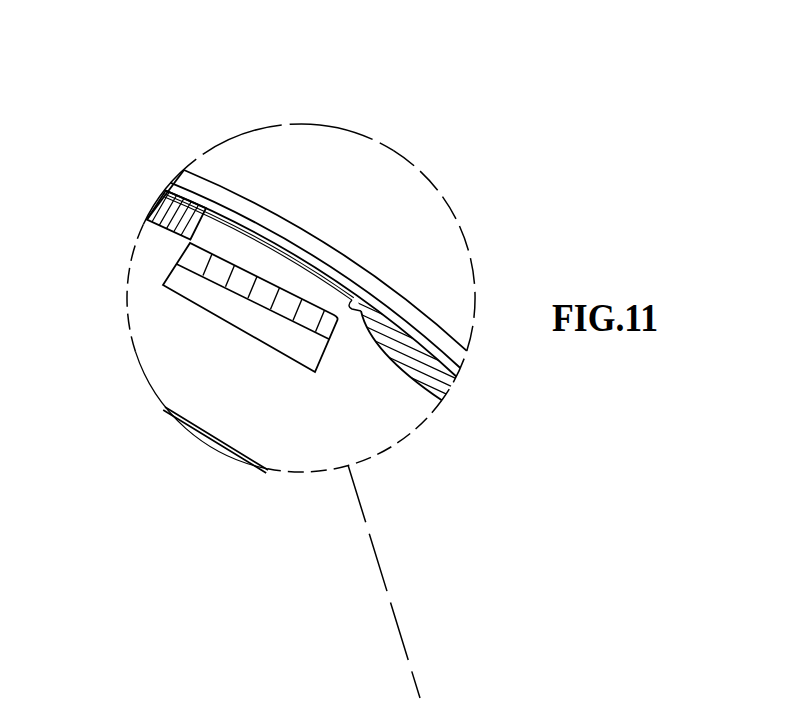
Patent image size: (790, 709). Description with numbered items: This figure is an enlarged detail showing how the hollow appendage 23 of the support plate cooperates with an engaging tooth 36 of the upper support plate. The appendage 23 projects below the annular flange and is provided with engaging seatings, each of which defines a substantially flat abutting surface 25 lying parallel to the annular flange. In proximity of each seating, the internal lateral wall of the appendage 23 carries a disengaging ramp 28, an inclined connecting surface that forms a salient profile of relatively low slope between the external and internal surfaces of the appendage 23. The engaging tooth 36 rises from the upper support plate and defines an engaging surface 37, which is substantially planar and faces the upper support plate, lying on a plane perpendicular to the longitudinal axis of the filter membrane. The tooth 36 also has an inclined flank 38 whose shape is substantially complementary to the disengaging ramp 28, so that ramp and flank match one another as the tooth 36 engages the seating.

The hollow appendage 23 is at (430, 367).
The abutting surface 25 is at (297, 262).
The disengaging ramp 28 is at (362, 312).
The engaging tooth 36 is at (273, 305).
The engaging surface 37 is at (245, 253).
The inclined flank 38 is at (385, 320).